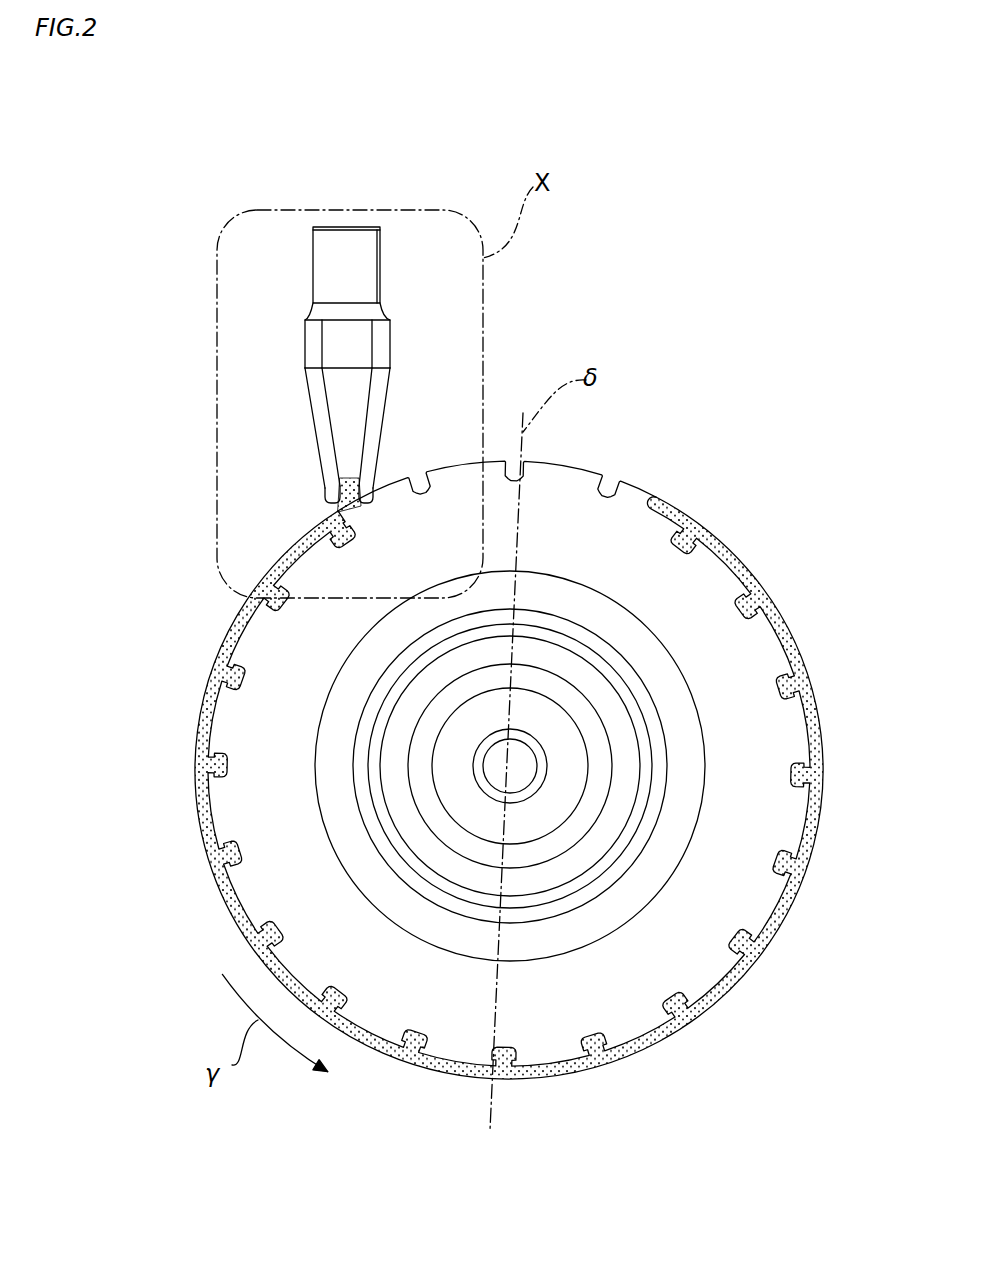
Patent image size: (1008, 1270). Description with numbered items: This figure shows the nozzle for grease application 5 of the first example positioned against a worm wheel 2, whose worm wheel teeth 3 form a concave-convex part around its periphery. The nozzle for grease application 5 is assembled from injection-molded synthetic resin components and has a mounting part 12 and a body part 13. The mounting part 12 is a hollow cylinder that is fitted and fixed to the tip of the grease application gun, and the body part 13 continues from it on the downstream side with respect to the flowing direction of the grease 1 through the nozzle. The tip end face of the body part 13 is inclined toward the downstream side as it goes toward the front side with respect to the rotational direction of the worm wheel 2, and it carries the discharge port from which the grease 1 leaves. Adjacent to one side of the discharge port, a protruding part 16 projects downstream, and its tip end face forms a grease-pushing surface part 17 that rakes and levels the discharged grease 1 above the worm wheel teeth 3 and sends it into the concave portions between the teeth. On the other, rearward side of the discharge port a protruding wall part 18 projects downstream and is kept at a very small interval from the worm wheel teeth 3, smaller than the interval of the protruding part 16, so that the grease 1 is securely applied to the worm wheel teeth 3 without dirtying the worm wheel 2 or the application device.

The grease 1 is at (800, 680).
The worm wheel 2 is at (778, 817).
The worm wheel teeth 3 is at (712, 998).
The nozzle for grease application 5 is at (303, 425).
The mounting part 12 is at (368, 252).
The body part 13 is at (358, 353).
The protruding part 16 is at (328, 493).
The grease-pushing surface part 17 is at (322, 503).
The protruding wall part 18 is at (380, 484).